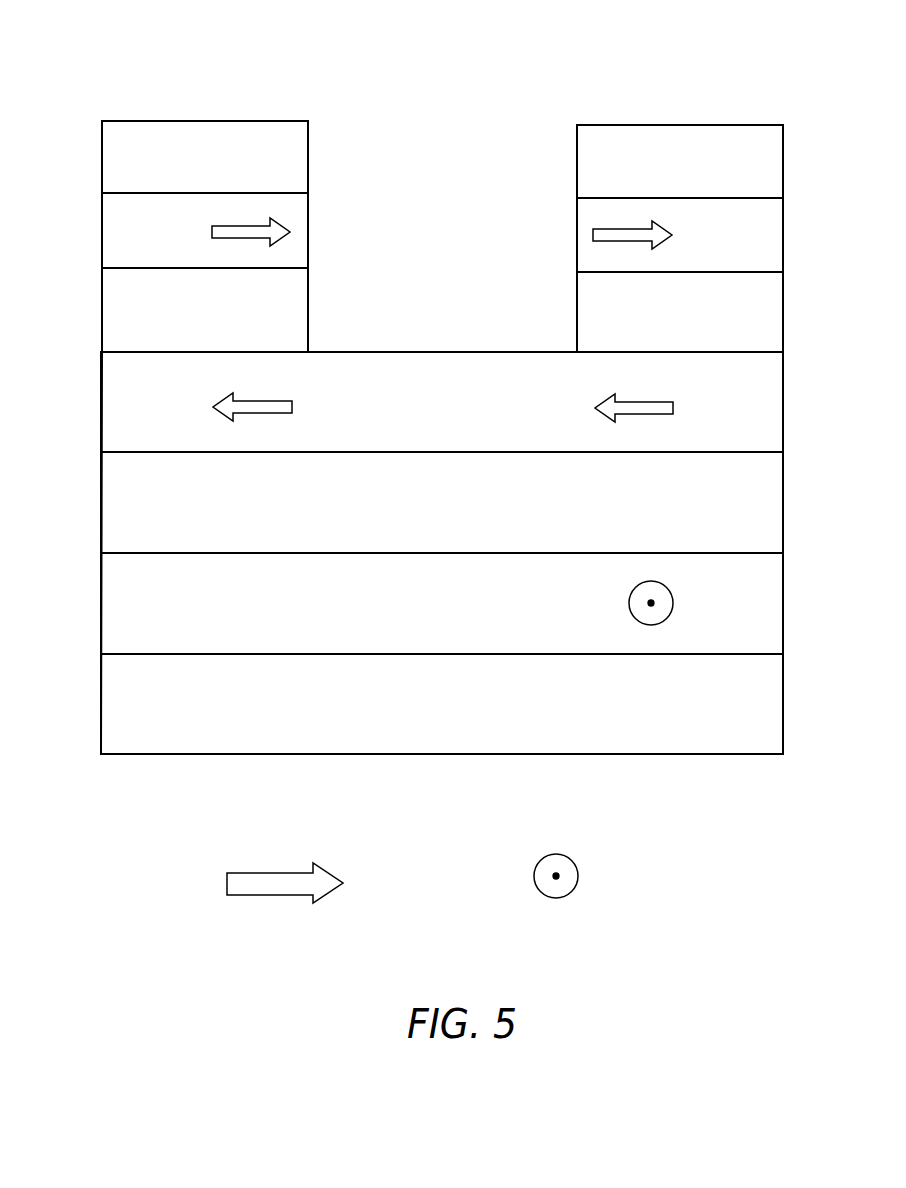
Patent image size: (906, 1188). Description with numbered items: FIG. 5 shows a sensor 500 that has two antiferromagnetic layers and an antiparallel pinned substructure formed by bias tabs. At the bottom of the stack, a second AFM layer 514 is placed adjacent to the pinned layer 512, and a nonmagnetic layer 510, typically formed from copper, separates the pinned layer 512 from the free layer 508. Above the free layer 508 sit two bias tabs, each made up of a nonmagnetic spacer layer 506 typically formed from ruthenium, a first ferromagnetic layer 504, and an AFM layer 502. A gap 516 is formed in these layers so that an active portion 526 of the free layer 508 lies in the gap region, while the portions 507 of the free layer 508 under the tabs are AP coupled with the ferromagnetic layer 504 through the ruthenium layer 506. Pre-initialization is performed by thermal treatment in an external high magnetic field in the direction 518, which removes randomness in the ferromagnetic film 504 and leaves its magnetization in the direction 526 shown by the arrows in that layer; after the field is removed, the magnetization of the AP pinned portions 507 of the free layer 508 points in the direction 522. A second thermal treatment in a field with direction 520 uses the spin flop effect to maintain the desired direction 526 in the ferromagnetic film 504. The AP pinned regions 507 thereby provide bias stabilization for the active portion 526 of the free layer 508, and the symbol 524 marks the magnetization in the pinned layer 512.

The sensor 500 is at (667, 910).
The AFM layer 502 is at (101, 157).
The first ferromagnetic layer 504 is at (101, 230).
The nonmagnetic spacer layer 506 is at (101, 295).
The portions of the free layer 507 is at (102, 90).
The free layer 508 is at (101, 398).
The nonmagnetic layer 510 is at (101, 495).
The pinned layer 512 is at (101, 596).
The second AFM layer 514 is at (101, 697).
The gap 516 is at (577, 69).
The direction of external magnetic field 518 is at (269, 872).
The direction of second external magnetic field 520 is at (538, 863).
The magnetization direction of AP pinned free layer portions 522 is at (272, 400).
The pinned layer magnetization 524 is at (673, 603).
The active portion of the free layer / magnetization direction of ferromagnetic laye 526 is at (290, 226).